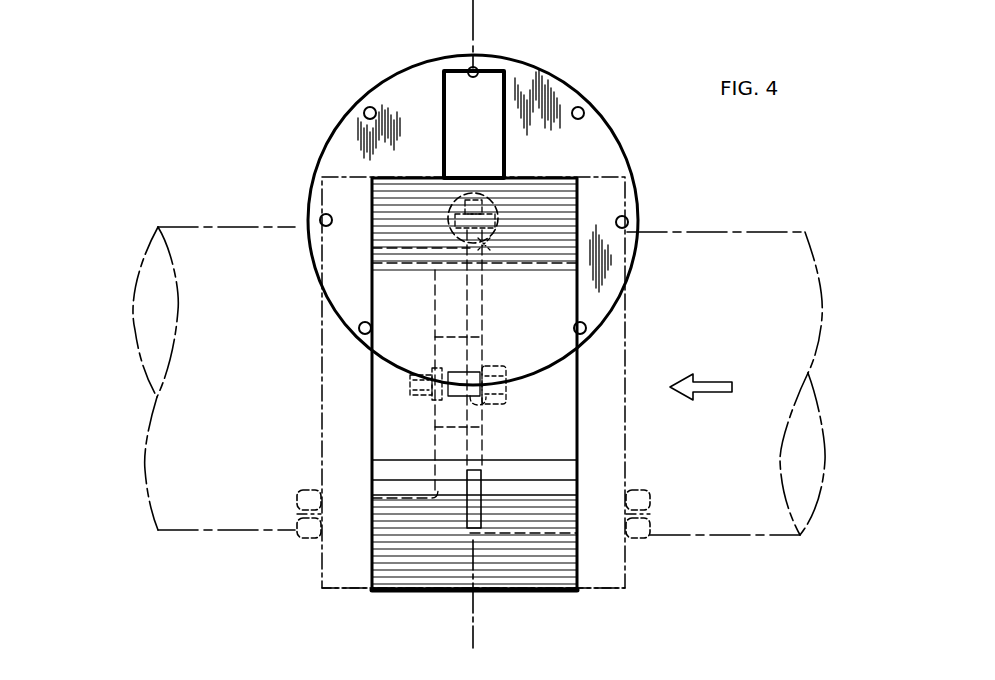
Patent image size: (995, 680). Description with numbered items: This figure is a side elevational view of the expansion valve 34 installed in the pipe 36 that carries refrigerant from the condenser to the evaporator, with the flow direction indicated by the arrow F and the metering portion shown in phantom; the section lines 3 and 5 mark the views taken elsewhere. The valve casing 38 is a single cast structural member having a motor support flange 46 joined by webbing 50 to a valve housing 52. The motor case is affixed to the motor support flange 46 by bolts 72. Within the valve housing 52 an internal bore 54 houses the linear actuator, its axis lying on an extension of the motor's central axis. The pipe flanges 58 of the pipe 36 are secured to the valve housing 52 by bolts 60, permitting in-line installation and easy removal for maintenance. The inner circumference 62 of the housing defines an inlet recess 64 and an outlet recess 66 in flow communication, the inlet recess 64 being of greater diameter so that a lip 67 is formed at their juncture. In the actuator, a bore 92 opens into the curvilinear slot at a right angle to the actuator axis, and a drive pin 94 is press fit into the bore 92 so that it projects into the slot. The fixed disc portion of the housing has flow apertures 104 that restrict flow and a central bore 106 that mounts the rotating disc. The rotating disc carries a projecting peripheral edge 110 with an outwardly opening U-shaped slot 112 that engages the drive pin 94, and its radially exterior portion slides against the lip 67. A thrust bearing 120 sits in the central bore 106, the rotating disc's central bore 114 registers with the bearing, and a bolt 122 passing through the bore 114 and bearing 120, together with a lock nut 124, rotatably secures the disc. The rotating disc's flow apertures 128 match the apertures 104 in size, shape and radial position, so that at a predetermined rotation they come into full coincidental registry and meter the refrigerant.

The section line 3 is at (334, 0).
The section line 5 is at (512, 635).
The expansion valve 34 is at (305, 166).
The pipe 36 is at (195, 505).
The valve casing 38 is at (538, 192).
The motor support flange 46 is at (415, 89).
The webbing 50 is at (487, 153).
The valve housing 52 is at (560, 440).
The internal bore 54 is at (494, 215).
The pipe flanges 58 is at (350, 590).
The bolts 60 is at (648, 548).
The inner circumference 62 is at (555, 452).
The inlet recess 64 is at (555, 535).
The outlet recess 66 is at (372, 490).
The lip 67 is at (372, 250).
The bolts 72 is at (584, 110).
The bore 92 is at (430, 186).
The drive pin 94 is at (450, 226).
The flow aperture 104 is at (445, 305).
The central bore 106 is at (445, 430).
The peripheral edge 110 is at (492, 242).
The U-shaped slot 112 is at (510, 185).
The central bore 114 is at (485, 405).
The thrust bearing 120 is at (455, 370).
The bolt 122 is at (510, 386).
The lock nut 124 is at (422, 398).
The flow aperture 128 is at (490, 298).
The arrow F is at (718, 378).